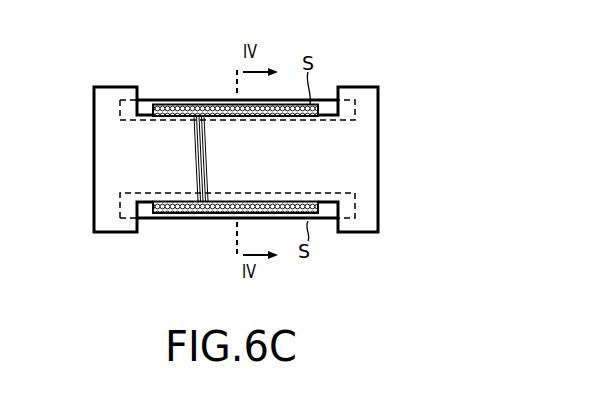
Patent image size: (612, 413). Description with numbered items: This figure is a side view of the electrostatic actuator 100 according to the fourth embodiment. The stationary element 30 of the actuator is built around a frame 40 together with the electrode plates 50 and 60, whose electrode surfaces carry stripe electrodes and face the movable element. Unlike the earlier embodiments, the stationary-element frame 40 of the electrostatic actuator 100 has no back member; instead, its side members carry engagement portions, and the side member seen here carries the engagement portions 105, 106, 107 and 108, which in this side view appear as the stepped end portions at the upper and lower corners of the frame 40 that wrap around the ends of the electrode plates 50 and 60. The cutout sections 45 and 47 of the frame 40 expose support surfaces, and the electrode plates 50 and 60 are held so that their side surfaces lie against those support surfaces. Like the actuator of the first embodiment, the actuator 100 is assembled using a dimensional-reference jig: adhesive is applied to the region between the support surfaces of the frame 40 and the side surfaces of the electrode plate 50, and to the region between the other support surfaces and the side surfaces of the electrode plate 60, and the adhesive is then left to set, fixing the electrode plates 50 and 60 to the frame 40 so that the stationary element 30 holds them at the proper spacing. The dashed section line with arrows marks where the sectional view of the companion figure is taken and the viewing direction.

The electrostatic actuator 100 is at (384, 80).
The stationary element 30 is at (380, 140).
The frame 40 is at (378, 182).
The engagement portion 105 is at (103, 97).
The engagement portion 106 is at (380, 101).
The engagement portion 107 is at (102, 218).
The engagement portion 108 is at (380, 221).
The cutout section 45 is at (139, 88).
The cutout section 47 is at (138, 222).
The electrode plate 50 is at (197, 96).
The electrode plate 60 is at (198, 220).